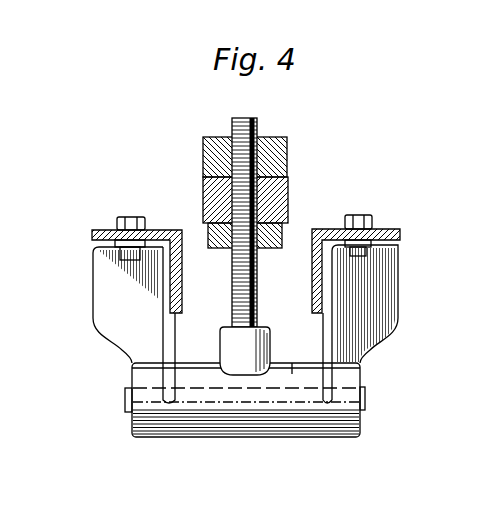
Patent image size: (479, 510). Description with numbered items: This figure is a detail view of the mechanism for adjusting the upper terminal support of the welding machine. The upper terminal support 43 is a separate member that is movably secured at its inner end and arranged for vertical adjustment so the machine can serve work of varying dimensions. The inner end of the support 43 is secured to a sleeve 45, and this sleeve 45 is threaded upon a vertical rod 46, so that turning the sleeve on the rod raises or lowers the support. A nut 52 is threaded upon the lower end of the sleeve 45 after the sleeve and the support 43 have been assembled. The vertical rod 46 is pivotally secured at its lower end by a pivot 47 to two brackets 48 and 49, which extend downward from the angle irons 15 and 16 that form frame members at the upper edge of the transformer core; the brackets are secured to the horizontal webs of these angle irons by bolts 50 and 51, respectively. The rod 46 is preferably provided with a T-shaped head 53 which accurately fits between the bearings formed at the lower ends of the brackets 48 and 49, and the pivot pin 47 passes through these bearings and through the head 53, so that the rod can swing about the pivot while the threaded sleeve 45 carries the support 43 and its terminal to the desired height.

The angle iron 15 is at (93, 228).
The angle iron 16 is at (400, 232).
The support 43 is at (289, 195).
The sleeve 45 is at (290, 152).
The vertical rod 46 is at (256, 121).
The pivot 47 is at (125, 400).
The bracket 48 is at (110, 303).
The bracket 49 is at (372, 325).
The bolt 50 is at (146, 207).
The bolt 51 is at (363, 216).
The nut 52 is at (216, 249).
The T-shaped head 53 is at (271, 357).